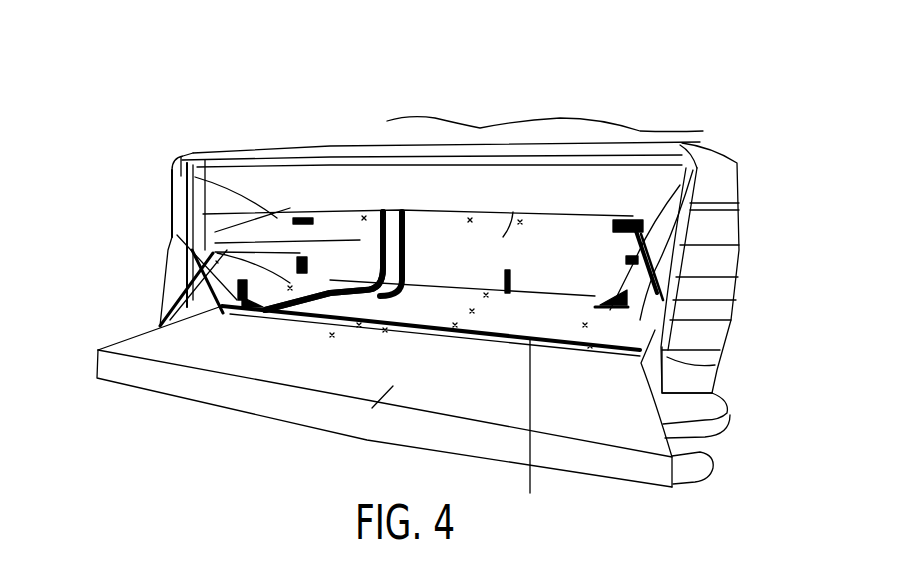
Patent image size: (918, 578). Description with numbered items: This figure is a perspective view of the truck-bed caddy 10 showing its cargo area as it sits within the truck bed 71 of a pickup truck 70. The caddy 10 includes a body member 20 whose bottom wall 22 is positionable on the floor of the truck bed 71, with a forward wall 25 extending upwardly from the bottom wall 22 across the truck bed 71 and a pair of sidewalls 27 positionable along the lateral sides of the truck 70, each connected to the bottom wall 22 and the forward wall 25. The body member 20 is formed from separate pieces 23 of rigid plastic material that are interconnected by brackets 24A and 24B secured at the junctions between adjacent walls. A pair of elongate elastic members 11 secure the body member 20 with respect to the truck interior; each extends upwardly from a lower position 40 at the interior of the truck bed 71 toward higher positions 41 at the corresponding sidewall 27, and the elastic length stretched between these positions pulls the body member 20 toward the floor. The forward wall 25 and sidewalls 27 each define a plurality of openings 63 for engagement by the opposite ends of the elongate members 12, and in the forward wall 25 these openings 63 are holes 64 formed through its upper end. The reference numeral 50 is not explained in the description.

The caddy 10 is at (478, 116).
The elongate elastic members 11 is at (739, 245).
The elongate members 12 is at (314, 308).
The body member 20 is at (270, 207).
The bottom wall 22 is at (267, 317).
The separate pieces 23 is at (215, 252).
The bracket 24A is at (303, 257).
The bracket 24B is at (731, 320).
The forward wall 25 is at (513, 212).
The sidewalls 27 is at (172, 172).
The lower position 40 is at (622, 280).
The higher positions 41 is at (626, 260).
The bottom rail 50 is at (393, 327).
The openings 63 is at (390, 207).
The holes 64 is at (375, 207).
The pickup truck 70 is at (170, 205).
The truck bed 71 is at (672, 357).